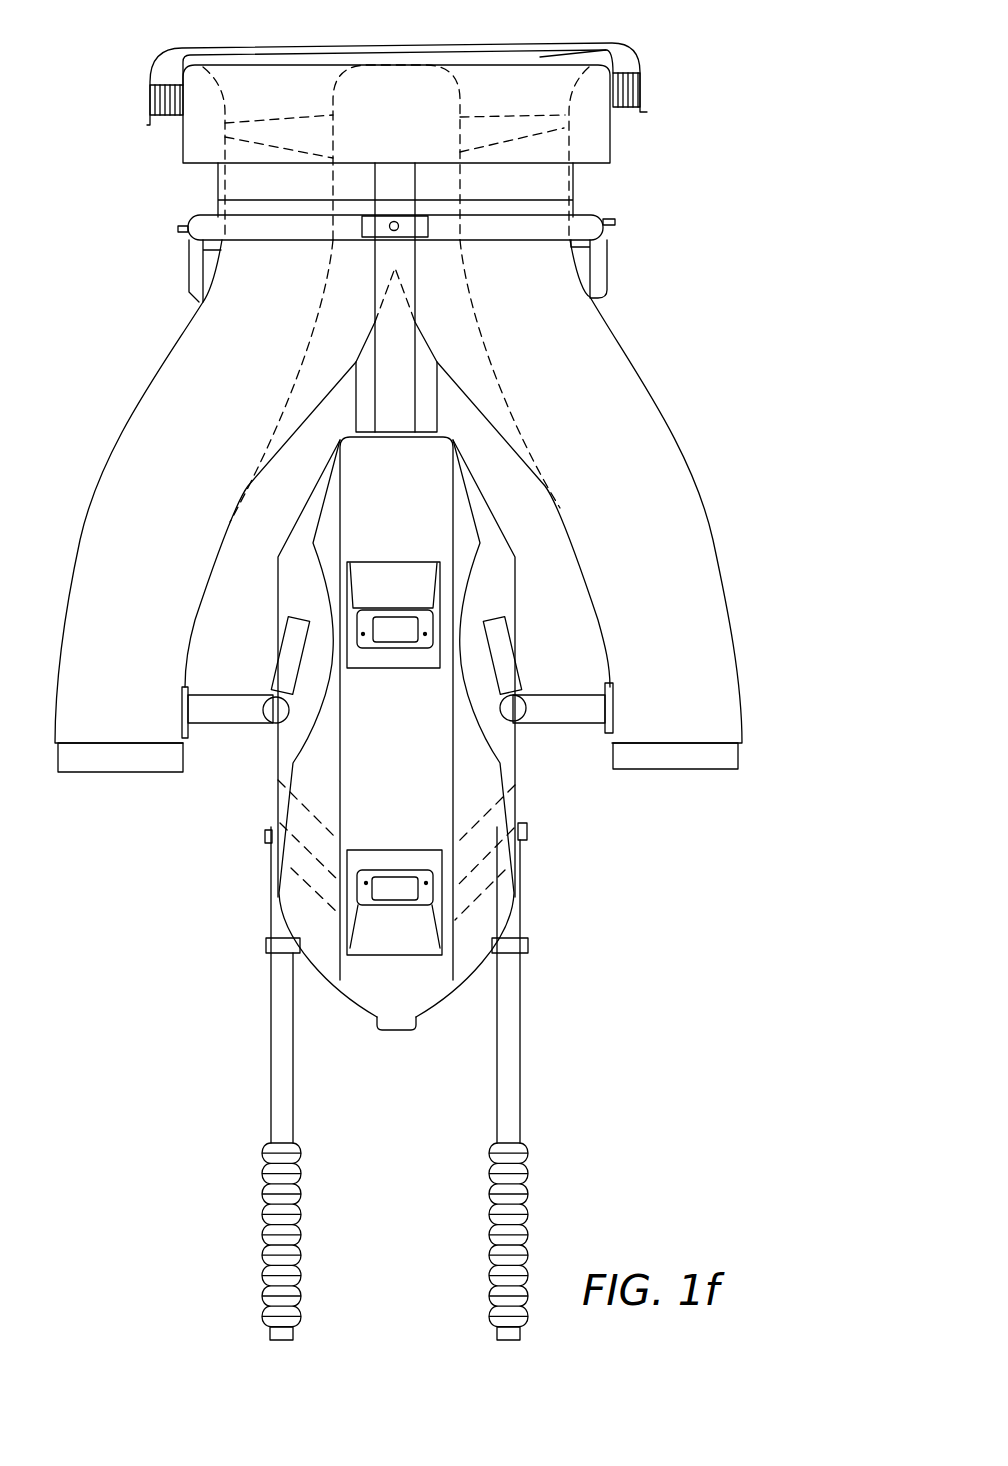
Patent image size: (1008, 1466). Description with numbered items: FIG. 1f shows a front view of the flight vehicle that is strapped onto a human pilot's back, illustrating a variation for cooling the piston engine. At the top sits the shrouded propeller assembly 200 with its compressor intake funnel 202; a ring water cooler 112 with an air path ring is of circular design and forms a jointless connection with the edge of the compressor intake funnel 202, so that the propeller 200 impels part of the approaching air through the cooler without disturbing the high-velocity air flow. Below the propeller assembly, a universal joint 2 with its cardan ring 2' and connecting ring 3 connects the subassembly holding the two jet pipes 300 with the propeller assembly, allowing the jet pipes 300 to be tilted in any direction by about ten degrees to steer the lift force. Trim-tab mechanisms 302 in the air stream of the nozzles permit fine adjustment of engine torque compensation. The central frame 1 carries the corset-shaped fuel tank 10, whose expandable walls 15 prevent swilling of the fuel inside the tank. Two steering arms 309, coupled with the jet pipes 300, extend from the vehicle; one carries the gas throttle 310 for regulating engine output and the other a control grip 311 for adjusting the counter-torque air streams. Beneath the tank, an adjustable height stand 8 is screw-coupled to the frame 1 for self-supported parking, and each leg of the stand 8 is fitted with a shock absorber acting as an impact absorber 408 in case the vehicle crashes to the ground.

The frame 1 is at (406, 397).
The universal joint 2 is at (442, 220).
The cardan ring 2' is at (619, 196).
The connecting ring 3 is at (188, 265).
The stand 8 is at (273, 1068).
The fuel tank 10 is at (411, 802).
The expandable walls 15 is at (313, 898).
The ring water cooler with air path ring 112 is at (627, 62).
The shrouded propeller assembly 200 is at (311, 120).
The compressor intake funnel 202 is at (590, 86).
The jet pipes 300 is at (118, 494).
The trim-tab mechanisms 302 is at (77, 760).
The steering arms 309 is at (230, 713).
The gas throttle 310 is at (298, 647).
The control grip 311 is at (507, 657).
The impact absorber 408 is at (263, 1198).